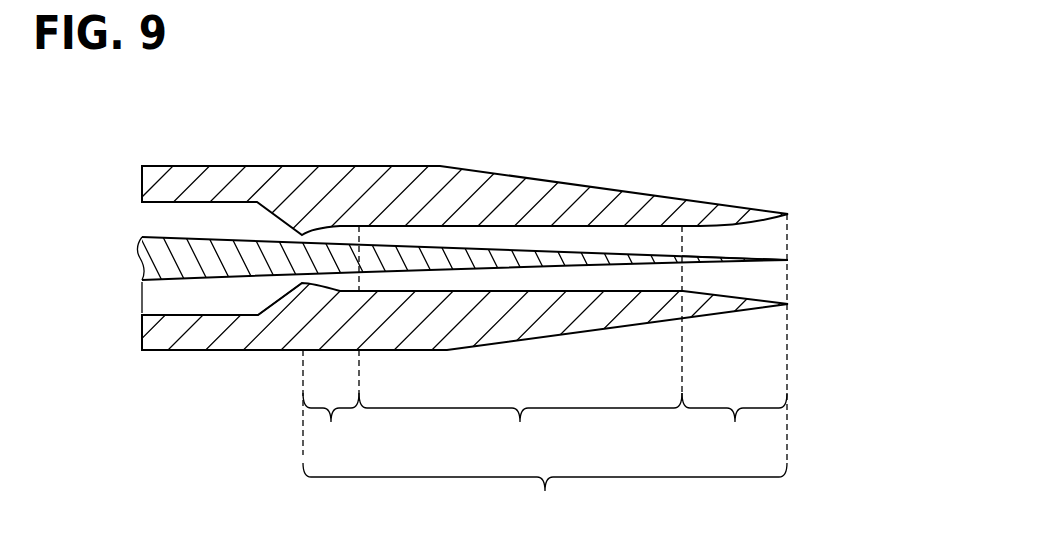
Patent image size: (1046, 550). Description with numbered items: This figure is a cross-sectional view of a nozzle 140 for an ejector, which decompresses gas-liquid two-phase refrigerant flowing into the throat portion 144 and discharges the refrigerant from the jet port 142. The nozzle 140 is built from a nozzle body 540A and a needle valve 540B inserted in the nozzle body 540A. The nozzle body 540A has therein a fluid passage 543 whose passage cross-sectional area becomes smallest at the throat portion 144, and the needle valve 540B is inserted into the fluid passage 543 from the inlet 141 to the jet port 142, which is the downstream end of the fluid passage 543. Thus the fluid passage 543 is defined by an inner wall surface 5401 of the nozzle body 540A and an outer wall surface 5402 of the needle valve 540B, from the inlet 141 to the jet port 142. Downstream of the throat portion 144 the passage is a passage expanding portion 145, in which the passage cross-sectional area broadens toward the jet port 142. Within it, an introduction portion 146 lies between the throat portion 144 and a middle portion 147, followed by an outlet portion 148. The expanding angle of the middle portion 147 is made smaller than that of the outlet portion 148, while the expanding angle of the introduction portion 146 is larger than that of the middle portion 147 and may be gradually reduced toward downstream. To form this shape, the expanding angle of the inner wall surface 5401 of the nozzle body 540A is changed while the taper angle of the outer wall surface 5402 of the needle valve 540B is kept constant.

The nozzle 140 is at (754, 66).
The nozzle body 540A is at (369, 165).
The needle valve 540B is at (545, 248).
The fluid passage 543 is at (490, 235).
The inner wall surface 5401 is at (620, 228).
The outer wall surface 5402 is at (690, 250).
The jet port 142 is at (788, 235).
The inlet 141 is at (145, 297).
The throat portion 144 is at (300, 282).
The passage expanding portion 145 is at (545, 493).
The introduction portion 146 is at (331, 341).
The middle portion 147 is at (520, 341).
The outlet portion 148 is at (734, 424).